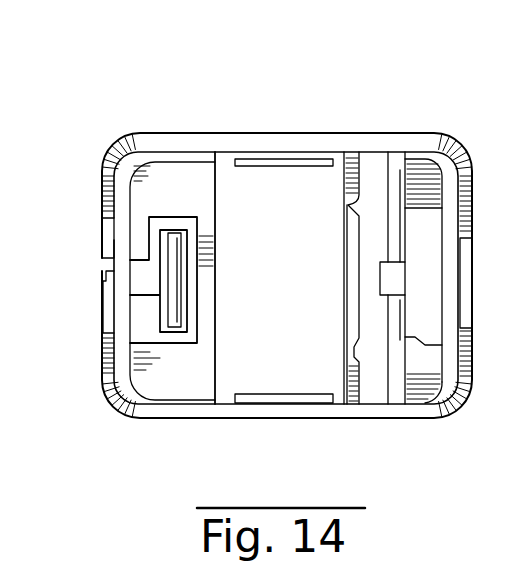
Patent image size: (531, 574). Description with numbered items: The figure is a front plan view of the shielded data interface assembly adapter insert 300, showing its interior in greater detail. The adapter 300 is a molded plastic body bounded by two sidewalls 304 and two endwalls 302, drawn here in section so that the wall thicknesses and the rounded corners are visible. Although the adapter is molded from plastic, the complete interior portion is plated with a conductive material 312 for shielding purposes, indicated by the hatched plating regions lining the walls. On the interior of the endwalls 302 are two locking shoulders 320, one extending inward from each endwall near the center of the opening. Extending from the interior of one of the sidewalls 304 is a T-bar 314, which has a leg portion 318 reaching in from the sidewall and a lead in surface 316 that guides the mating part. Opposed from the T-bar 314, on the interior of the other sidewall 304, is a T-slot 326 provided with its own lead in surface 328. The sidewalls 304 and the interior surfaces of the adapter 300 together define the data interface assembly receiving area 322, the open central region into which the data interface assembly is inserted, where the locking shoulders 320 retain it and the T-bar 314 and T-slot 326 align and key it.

The data interface assembly adapter insert 300 is at (376, 103).
The endwalls 302 is at (271, 132).
The sidewalls 304 is at (102, 220).
The conductive material 312 is at (432, 178).
The T-bar 314 is at (180, 298).
The lead in surface 316 is at (176, 259).
The leg portion 318 is at (148, 283).
The locking shoulders 320 is at (292, 178).
The data interface assembly receiving area 322 is at (322, 266).
The T-slot 326 is at (382, 279).
The lead in surface 328 is at (404, 372).